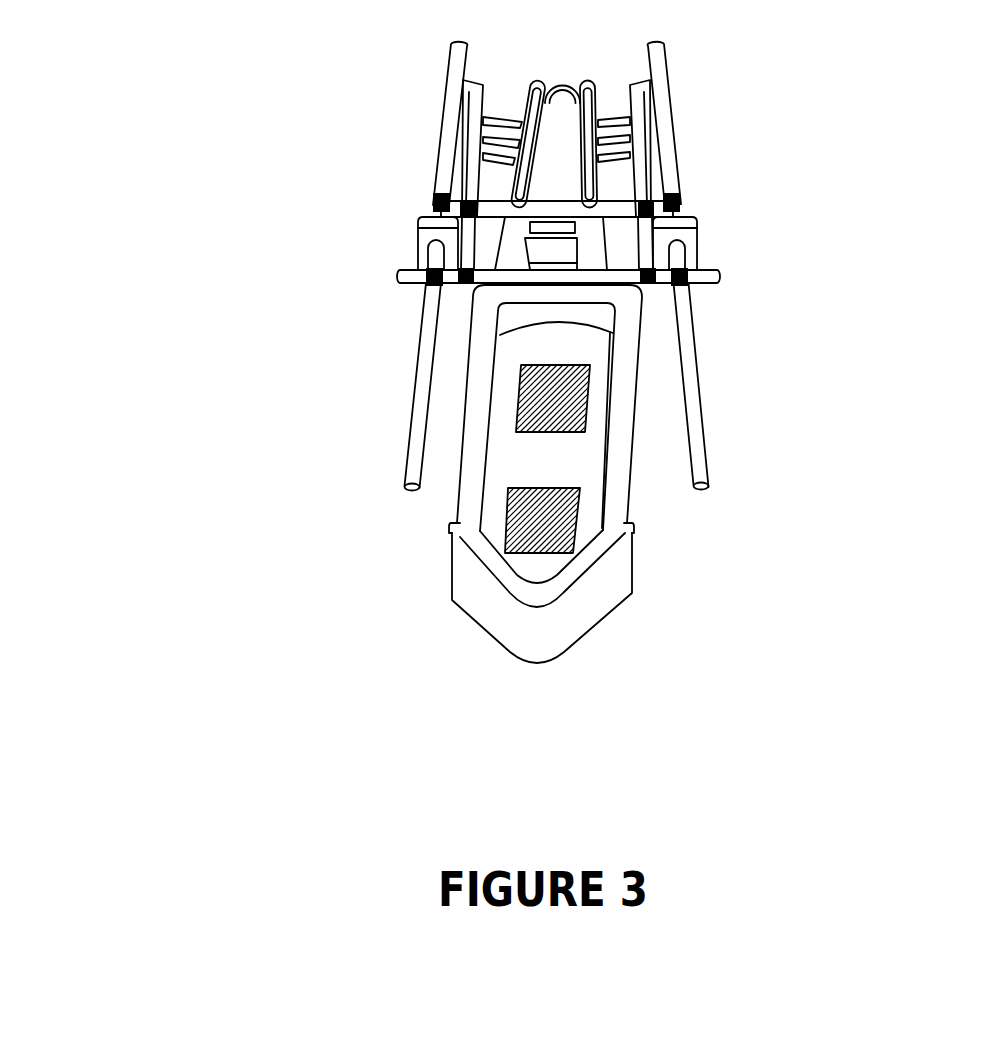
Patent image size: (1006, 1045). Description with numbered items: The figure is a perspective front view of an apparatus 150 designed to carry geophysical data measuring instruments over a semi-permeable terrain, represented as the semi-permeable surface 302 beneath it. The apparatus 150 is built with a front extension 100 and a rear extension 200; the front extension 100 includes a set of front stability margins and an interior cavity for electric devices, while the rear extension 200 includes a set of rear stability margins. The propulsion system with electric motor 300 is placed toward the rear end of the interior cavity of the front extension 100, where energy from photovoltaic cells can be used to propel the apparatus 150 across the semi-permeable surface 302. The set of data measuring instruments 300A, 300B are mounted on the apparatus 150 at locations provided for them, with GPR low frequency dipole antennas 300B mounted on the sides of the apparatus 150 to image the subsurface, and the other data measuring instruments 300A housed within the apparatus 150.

The apparatus 150 is at (766, 697).
The rear extension 200 is at (595, 235).
The front extension 100 is at (620, 505).
The data measuring instruments 300 is at (577, 393).
The data measuring instruments 300A is at (537, 553).
The data measuring instruments 300B is at (423, 224).
The semi-permeable surface 302 is at (356, 552).